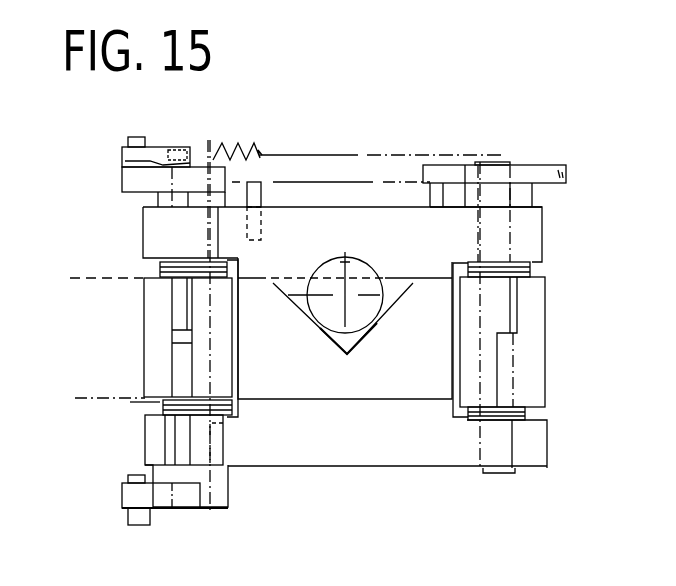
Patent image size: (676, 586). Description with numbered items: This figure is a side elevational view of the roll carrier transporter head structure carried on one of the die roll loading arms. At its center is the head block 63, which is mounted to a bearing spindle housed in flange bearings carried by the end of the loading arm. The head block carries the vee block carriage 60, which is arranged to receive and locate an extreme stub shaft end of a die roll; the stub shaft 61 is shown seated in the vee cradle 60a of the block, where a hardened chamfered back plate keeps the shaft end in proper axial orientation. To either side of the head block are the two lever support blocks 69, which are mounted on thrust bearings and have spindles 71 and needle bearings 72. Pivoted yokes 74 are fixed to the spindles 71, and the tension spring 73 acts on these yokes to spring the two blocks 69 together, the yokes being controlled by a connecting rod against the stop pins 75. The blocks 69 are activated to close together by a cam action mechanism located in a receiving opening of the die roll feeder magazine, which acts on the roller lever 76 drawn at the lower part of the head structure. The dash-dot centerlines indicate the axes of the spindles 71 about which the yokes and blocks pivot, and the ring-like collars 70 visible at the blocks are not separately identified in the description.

The vee block carriage 60 is at (262, 278).
The vee cradle 60a is at (382, 310).
The stub shaft 61 is at (375, 265).
The head block 63 is at (528, 232).
The lever support block 69 is at (157, 327).
The ring / collar 70 is at (157, 265).
The spindle 71 is at (200, 163).
The needle bearing 72 is at (167, 445).
The tension spring 73 is at (229, 147).
The pivoted yoke 74 is at (122, 176).
The stop pin 75 is at (258, 157).
The roller lever 76 is at (202, 492).